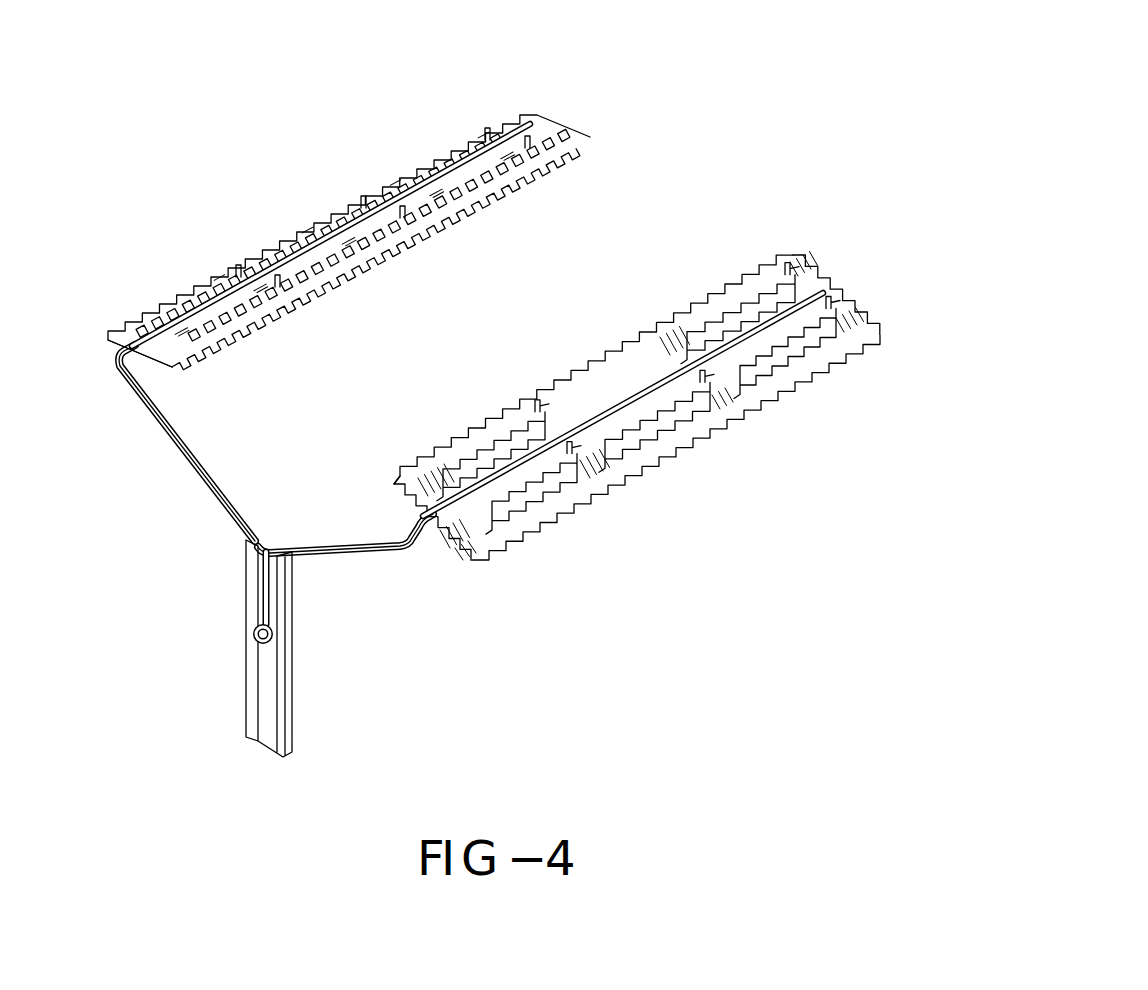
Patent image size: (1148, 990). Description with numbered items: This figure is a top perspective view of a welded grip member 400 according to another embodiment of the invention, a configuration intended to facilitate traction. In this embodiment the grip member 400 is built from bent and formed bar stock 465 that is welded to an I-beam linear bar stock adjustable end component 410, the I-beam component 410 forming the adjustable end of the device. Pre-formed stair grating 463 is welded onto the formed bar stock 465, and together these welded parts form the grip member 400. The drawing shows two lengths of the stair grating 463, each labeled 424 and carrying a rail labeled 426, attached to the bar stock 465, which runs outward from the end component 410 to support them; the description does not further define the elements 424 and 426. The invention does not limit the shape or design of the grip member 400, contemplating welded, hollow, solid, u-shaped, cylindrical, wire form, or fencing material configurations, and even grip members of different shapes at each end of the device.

The grip member 400 is at (738, 130).
The pad 424 is at (320, 298).
The rail wire 426 is at (373, 200).
The pre-formed stair grating 463 is at (190, 342).
The I-beam linear bar stock adjustable end component 410 is at (250, 689).
The bent and formed bar stock 465 is at (268, 617).